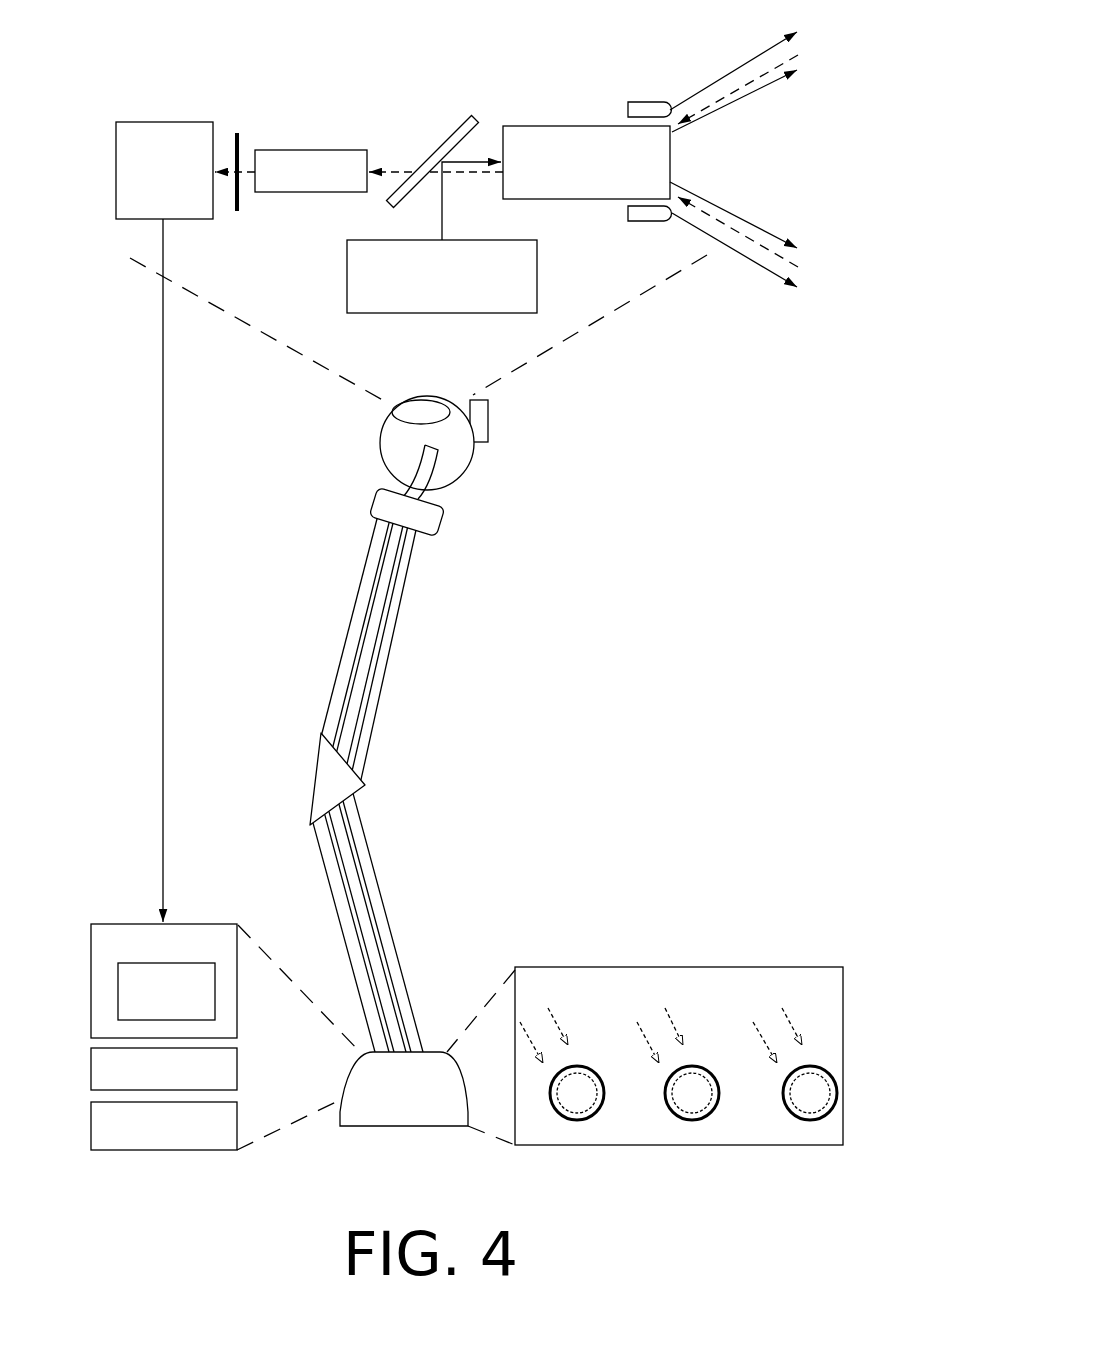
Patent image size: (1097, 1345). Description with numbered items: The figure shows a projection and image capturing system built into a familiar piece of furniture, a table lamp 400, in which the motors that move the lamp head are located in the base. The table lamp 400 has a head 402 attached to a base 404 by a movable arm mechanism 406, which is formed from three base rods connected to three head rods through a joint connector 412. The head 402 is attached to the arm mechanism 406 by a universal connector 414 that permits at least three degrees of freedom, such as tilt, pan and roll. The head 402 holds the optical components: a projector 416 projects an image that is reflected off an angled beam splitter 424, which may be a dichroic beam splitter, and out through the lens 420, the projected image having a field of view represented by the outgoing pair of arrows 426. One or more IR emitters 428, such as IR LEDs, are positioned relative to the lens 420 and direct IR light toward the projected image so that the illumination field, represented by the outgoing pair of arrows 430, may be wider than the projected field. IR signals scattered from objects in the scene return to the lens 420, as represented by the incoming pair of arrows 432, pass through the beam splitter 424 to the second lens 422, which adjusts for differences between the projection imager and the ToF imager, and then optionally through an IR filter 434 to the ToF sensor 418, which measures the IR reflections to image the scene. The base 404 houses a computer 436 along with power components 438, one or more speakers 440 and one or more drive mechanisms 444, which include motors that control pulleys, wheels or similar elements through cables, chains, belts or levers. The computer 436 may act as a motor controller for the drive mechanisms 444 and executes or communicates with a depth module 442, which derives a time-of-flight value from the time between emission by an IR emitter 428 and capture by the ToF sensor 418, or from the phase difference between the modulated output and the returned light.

The table lamp 400 is at (625, 640).
The head 402 is at (467, 472).
The base 404 is at (392, 1133).
The arm mechanism 406 is at (298, 755).
The joint connector 412 is at (358, 793).
The universal connector 414 is at (377, 505).
The projector 416 is at (442, 276).
The time of flight (ToF) sensor 418 is at (164, 170).
The lens 420 is at (586, 162).
The second lens 422 is at (311, 171).
The beam splitter 424 is at (466, 124).
The outgoing pair of arrows 426 is at (754, 163).
The IR emitter 428 is at (635, 267).
The outgoing pair of arrows 430 is at (750, 60).
The incoming pair of arrows 432 is at (725, 100).
The IR filter 434 is at (237, 212).
The computer 436 is at (130, 981).
The power components 438 is at (91, 1070).
The speaker 440 is at (91, 1122).
The depth module 442 is at (118, 992).
The drive mechanism 444 is at (592, 967).